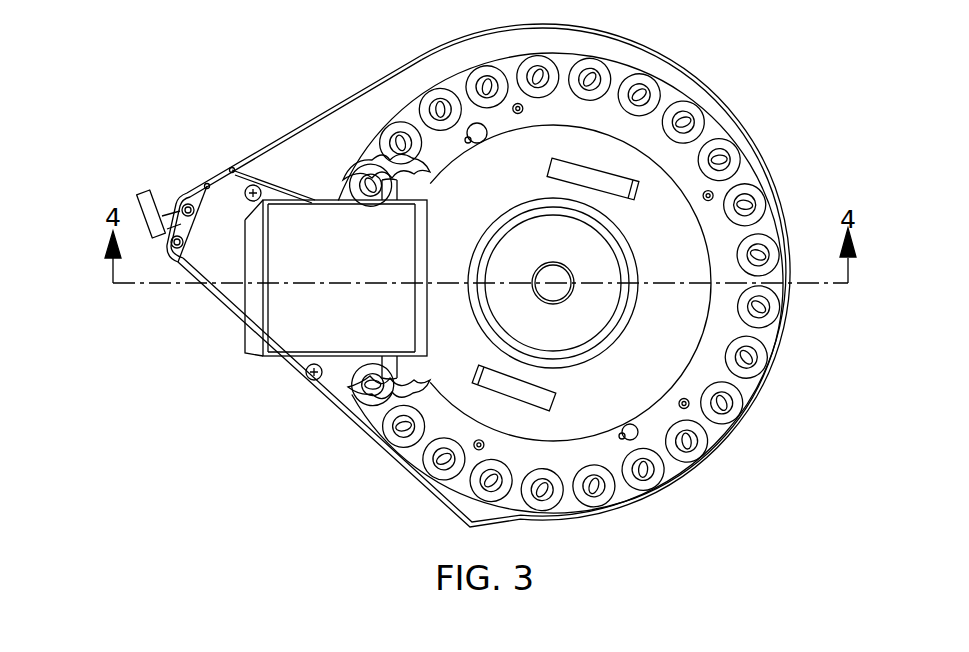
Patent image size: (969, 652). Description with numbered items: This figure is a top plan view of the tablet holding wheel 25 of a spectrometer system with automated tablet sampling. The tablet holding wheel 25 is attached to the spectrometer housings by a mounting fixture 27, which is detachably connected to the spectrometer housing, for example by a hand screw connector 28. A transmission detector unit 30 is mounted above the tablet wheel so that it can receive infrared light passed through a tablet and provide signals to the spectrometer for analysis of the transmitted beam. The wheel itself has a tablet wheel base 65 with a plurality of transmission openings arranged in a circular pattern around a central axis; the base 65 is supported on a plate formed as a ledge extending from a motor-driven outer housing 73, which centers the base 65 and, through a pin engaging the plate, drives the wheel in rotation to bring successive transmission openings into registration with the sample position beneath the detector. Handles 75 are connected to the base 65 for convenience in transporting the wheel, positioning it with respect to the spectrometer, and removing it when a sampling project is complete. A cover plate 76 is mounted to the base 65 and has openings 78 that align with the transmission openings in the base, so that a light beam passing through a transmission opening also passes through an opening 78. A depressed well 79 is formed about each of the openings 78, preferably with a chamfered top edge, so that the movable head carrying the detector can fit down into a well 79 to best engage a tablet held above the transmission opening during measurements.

The tablet holding wheel 25 is at (457, 83).
The mounting fixture 27 is at (221, 311).
The hand screw connector 28 is at (146, 194).
The transmission detector unit 30 is at (320, 333).
The tablet wheel base 65 is at (458, 192).
The motor-driven outer housing 73 is at (620, 232).
The handles 75 is at (604, 167).
The cover plate 76 is at (722, 243).
The openings 78 is at (752, 368).
The depressed well 79 is at (687, 457).